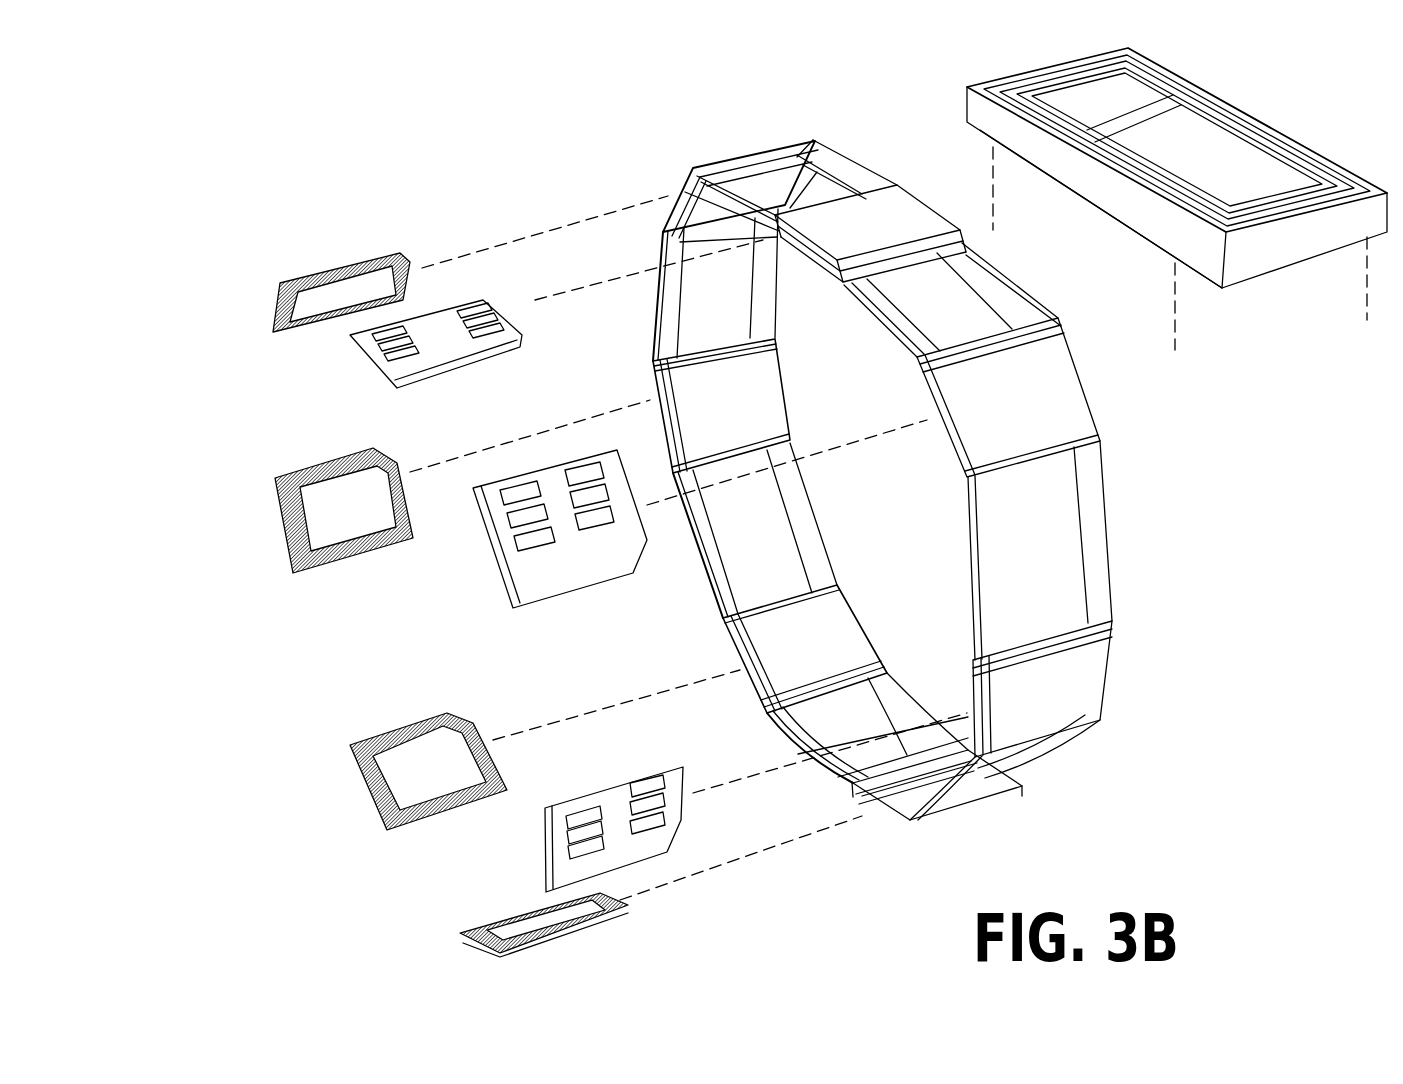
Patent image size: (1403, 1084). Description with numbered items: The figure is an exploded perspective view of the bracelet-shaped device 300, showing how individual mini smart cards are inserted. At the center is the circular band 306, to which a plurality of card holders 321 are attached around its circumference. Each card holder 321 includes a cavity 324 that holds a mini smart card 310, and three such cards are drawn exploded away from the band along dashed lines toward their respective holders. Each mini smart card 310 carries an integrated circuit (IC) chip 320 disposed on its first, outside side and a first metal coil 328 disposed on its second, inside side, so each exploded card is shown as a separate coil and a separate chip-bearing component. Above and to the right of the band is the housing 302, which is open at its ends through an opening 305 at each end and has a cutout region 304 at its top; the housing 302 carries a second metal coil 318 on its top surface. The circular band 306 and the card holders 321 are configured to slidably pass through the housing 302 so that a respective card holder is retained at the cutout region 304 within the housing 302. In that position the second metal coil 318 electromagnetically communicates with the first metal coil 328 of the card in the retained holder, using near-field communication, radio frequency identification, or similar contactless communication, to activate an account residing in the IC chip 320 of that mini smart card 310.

The device 300 is at (196, 139).
The housing 302 is at (1111, 201).
The cutout region 304 is at (1137, 120).
The opening 305 is at (1268, 242).
The circular band 306 is at (1093, 505).
The mini smart card 310 is at (403, 382).
The second metal coil 318 is at (1158, 195).
The integrated circuit (IC) chip 320 is at (474, 348).
The card holder 321 is at (678, 182).
The cavity 324 is at (672, 198).
The first metal coil 328 is at (285, 283).